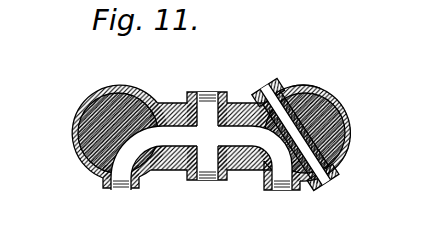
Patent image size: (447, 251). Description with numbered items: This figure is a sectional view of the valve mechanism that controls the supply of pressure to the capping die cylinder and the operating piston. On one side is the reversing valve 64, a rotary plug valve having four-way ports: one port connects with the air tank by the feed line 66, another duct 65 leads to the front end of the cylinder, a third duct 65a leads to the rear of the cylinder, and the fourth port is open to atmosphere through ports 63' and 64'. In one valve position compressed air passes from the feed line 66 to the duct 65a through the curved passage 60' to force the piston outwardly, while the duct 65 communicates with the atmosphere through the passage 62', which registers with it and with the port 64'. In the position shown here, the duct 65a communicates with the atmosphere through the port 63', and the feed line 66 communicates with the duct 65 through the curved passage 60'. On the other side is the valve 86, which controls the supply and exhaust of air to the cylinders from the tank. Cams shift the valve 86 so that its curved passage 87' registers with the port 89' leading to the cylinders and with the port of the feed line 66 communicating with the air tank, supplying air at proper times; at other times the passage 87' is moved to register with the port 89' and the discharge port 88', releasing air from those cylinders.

The valve 86 is at (96, 100).
The discharge port 88' is at (89, 133).
The curved passage 87' is at (114, 170).
The port 89' is at (121, 196).
The feed line 66 is at (212, 181).
The curved passage 60' is at (258, 175).
The duct 65 is at (280, 183).
The port 63' is at (337, 181).
The passage 62' is at (326, 133).
The reversing valve 64 is at (324, 133).
The port 64' is at (326, 69).
The duct 65a is at (270, 84).